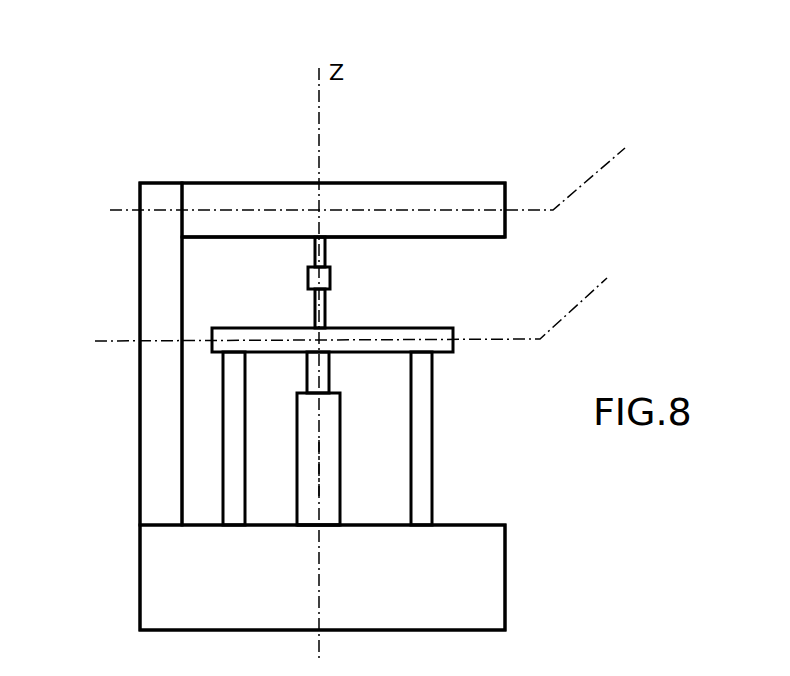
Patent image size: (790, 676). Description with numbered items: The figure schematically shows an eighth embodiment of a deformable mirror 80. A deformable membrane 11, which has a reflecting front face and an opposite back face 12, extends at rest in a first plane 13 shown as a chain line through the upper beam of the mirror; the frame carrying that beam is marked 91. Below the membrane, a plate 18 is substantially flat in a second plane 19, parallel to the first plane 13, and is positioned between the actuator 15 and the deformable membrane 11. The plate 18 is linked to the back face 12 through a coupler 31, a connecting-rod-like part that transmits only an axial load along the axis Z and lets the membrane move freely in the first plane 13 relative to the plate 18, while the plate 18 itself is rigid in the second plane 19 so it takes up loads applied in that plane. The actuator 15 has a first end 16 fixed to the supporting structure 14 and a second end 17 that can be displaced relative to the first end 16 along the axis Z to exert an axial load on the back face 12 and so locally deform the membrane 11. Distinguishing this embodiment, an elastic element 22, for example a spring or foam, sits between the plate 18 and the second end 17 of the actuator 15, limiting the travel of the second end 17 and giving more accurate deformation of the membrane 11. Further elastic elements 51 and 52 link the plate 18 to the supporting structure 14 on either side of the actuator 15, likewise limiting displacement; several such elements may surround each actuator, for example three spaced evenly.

The deformable mirror 80 is at (191, 78).
The frame column 91 is at (158, 184).
The deformable membrane 11 is at (308, 198).
The back face 12 is at (286, 232).
The first plane 13 is at (473, 153).
The second plane 19 is at (527, 307).
The coupler 31 is at (323, 300).
The plate 18 is at (358, 337).
The elastic element 22 is at (313, 367).
The second end 17 is at (340, 395).
The actuator 15 is at (325, 475).
The first end 16 is at (327, 525).
The elastic element 51 is at (235, 417).
The second elastic element 52 is at (418, 460).
The supporting structure 14 is at (448, 580).